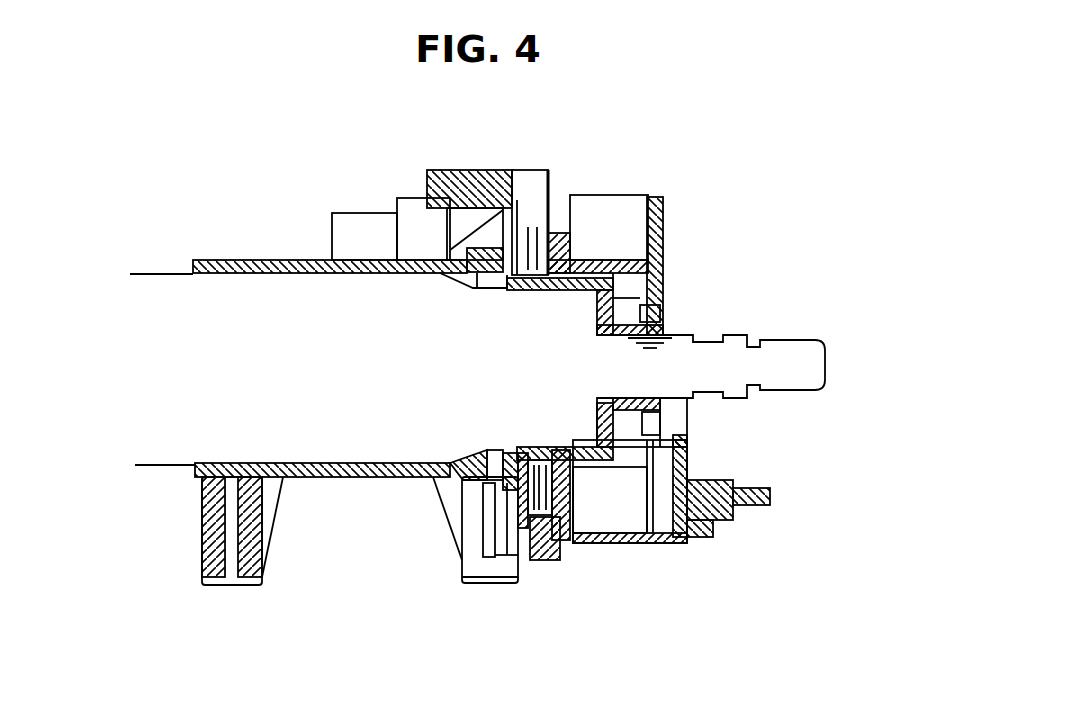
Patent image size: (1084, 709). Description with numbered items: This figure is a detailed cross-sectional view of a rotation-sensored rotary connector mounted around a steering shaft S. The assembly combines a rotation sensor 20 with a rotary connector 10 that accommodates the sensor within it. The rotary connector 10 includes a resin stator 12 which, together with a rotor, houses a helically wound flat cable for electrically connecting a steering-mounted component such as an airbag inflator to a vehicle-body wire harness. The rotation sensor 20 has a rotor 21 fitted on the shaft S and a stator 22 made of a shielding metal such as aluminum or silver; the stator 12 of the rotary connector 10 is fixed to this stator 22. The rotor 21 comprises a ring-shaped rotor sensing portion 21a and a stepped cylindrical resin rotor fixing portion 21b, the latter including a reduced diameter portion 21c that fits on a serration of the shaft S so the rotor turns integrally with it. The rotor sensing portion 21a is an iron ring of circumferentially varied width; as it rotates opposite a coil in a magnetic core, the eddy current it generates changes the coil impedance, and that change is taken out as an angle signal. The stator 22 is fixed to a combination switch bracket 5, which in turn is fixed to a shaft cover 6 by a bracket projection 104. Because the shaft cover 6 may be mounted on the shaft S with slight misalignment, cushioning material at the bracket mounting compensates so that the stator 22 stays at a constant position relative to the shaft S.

The combination switch bracket 5 is at (197, 568).
The shaft cover 6 is at (251, 285).
The rotary connector 10 is at (627, 193).
The stator 12 is at (626, 192).
The rotation sensor 20 is at (524, 170).
The rotor 21 is at (513, 557).
The rotor sensing portion 21a is at (567, 543).
The rotor fixing portion 21b is at (538, 452).
The reduced diameter portion 21c is at (690, 405).
The stator 22 is at (556, 182).
The bracket projection 104 is at (293, 463).
The shaft S is at (827, 366).